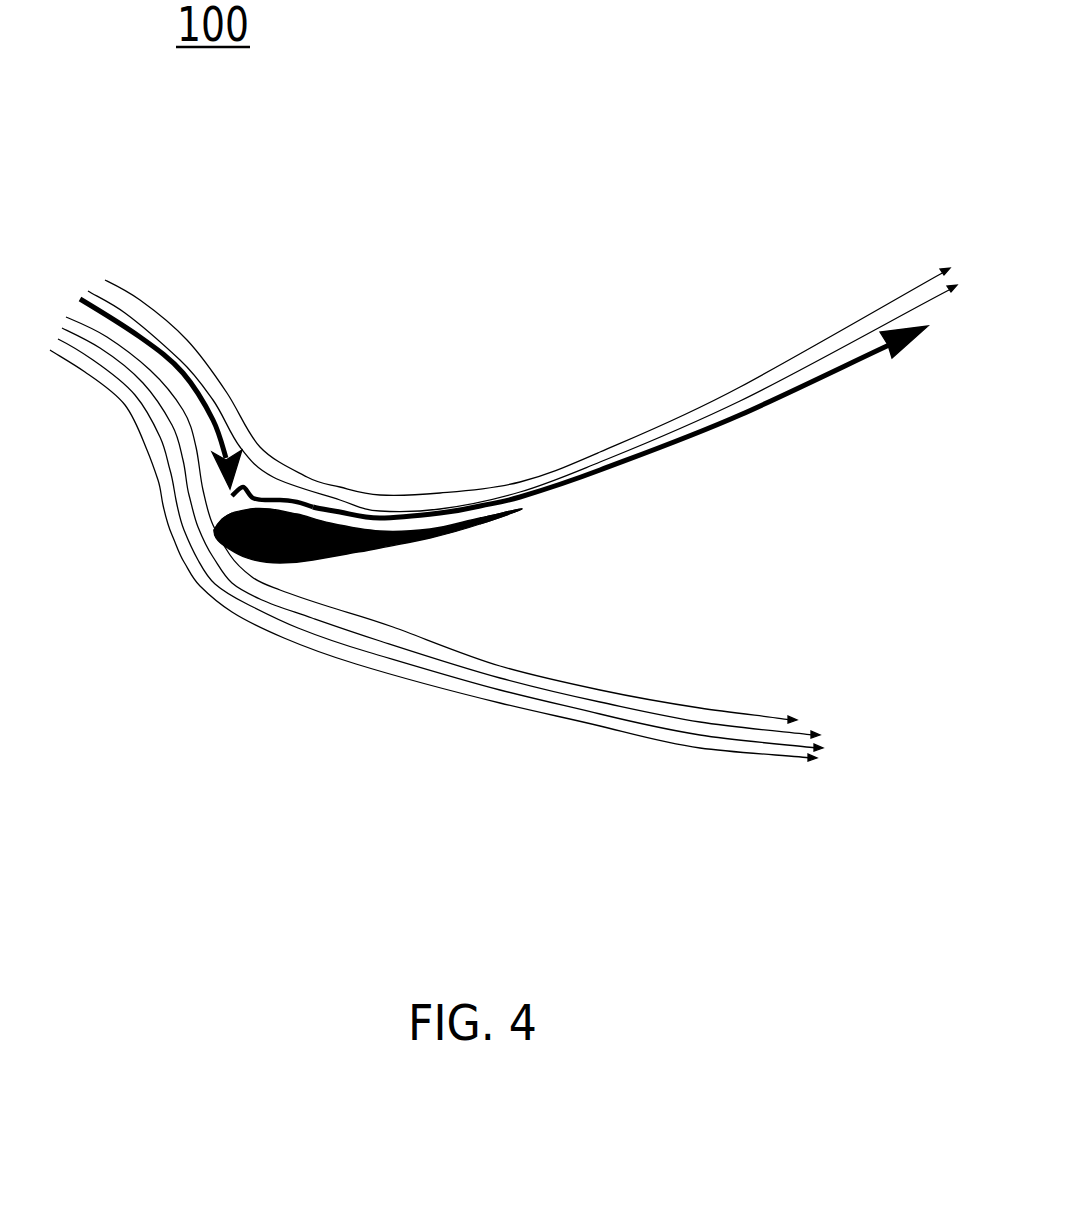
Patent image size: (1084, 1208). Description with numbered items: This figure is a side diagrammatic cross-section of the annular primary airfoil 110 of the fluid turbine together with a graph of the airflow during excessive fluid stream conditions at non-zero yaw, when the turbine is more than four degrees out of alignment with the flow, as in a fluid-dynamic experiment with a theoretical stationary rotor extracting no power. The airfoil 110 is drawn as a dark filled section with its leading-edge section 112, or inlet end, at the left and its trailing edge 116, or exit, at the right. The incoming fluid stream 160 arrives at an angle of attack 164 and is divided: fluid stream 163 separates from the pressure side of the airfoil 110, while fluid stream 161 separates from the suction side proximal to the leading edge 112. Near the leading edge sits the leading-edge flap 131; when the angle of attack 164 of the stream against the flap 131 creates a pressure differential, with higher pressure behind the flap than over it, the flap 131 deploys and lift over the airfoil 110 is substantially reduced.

The primary airfoil 110 is at (317, 563).
The leading-edge section 112 is at (196, 527).
The trailing edge 116 is at (545, 512).
The leading-edge flap 131 is at (245, 497).
The fluid stream 160 is at (68, 372).
The fluid stream 161 is at (224, 642).
The fluid stream 163 is at (232, 385).
The angle of attack 164 is at (170, 355).